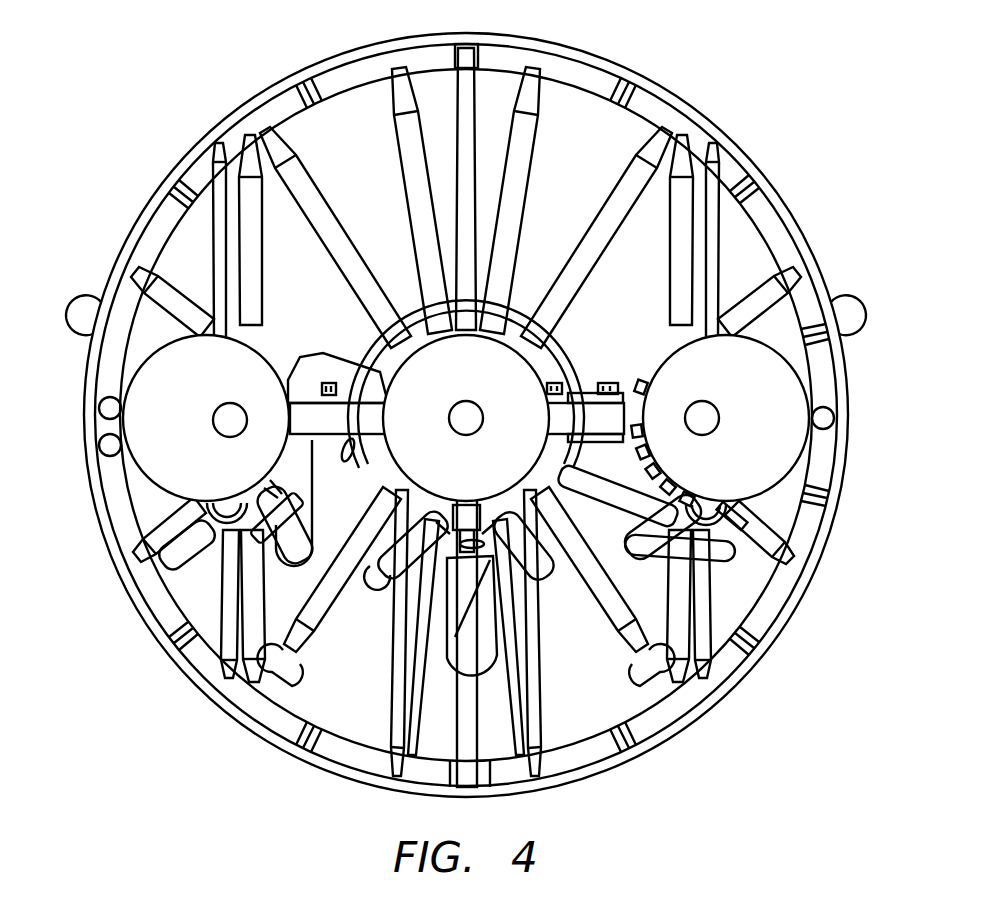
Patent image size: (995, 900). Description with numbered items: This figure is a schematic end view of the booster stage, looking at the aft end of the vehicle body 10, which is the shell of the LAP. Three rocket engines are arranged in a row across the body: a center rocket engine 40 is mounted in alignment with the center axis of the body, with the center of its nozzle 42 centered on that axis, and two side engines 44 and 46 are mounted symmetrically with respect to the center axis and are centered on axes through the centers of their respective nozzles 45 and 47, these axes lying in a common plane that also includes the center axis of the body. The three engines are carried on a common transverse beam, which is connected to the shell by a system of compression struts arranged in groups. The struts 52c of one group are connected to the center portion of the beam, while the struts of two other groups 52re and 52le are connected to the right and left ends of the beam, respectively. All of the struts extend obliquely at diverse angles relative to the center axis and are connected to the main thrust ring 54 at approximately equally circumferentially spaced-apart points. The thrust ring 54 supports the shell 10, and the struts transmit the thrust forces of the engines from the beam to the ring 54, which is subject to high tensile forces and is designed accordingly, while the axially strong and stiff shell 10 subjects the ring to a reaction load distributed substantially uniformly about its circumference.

The vehicle body 10 is at (254, 86).
The main thrust ring 54 is at (572, 75).
The center group of compression struts 52c is at (399, 146).
The left-end group of compression struts 52le is at (157, 286).
The right-end group of compression struts 52re is at (775, 286).
The nozzle of side engine 47 is at (193, 432).
The nozzle of center engine 42 is at (527, 432).
The nozzle of side engine 45 is at (779, 432).
The side engine 46 is at (214, 534).
The center rocket engine 40 is at (380, 600).
The side engine 44 is at (782, 492).